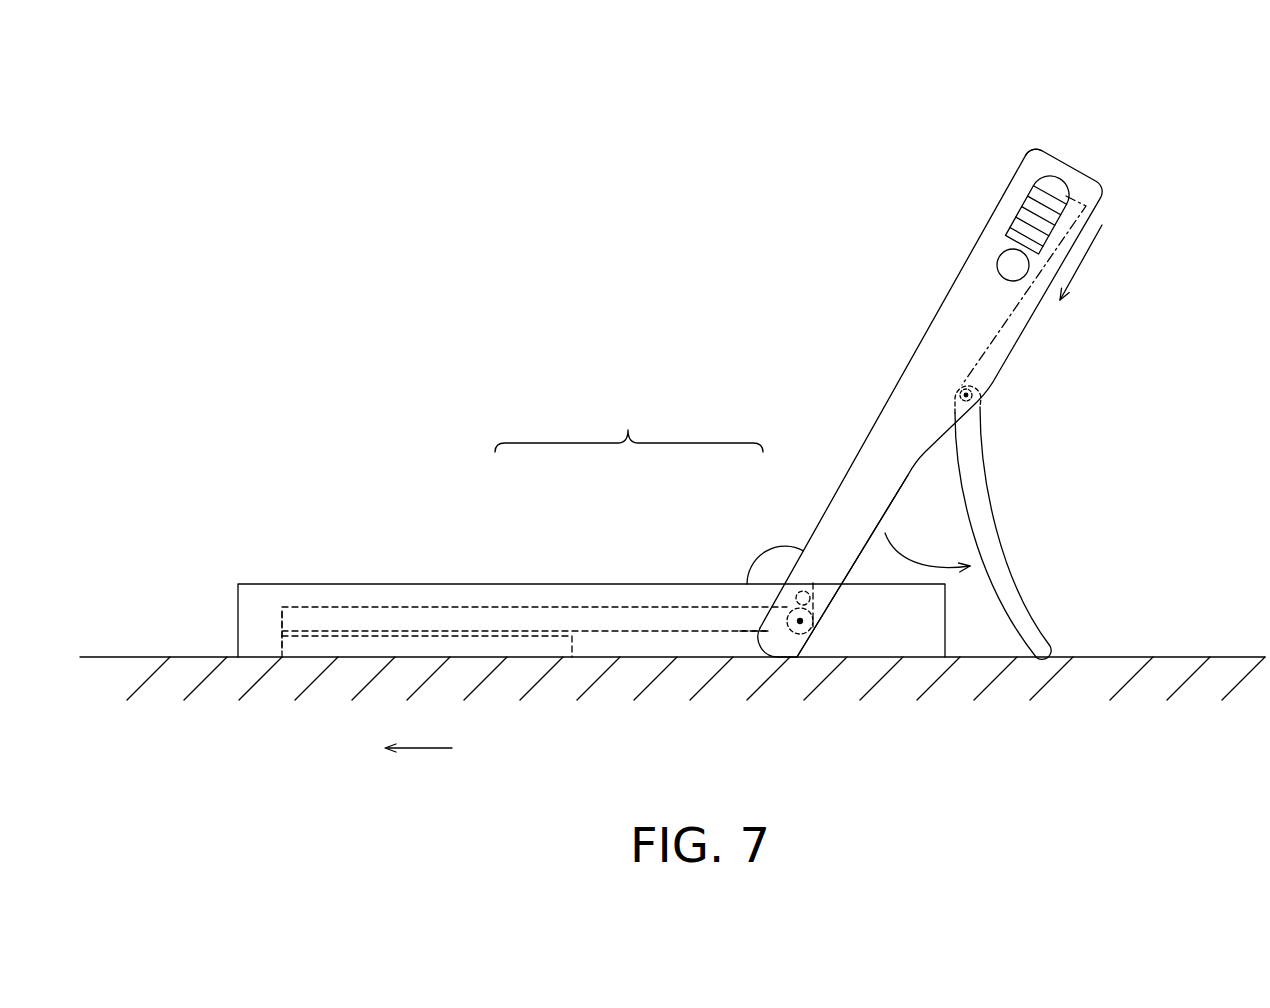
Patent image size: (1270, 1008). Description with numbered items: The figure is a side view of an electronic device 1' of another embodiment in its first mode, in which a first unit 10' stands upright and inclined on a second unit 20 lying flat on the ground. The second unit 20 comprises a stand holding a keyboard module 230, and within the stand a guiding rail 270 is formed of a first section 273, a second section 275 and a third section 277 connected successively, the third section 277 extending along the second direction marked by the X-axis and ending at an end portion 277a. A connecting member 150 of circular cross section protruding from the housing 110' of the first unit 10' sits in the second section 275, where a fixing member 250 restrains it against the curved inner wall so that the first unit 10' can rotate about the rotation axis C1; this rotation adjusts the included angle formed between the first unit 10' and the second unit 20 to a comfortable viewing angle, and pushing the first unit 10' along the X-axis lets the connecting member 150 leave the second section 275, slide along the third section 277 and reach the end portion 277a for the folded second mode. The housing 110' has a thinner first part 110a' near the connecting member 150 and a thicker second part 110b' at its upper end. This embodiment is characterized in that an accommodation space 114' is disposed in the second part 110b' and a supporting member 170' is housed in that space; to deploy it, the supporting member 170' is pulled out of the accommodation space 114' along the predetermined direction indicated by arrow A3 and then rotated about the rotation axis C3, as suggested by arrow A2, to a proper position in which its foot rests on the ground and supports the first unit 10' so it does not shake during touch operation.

The electronic device 1' is at (268, 135).
The first unit 10' is at (991, 106).
The second unit 20 is at (218, 607).
The housing 110' is at (931, 403).
The first part 110a' is at (834, 509).
The second part 110b' is at (980, 204).
The accommodation space 114' is at (1076, 290).
The connecting member 150 is at (788, 628).
The supporting member 170' is at (1050, 522).
The keyboard module 230 is at (373, 645).
The fixing member 250 is at (820, 602).
The guiding rail 270 is at (629, 423).
The first section 273 is at (785, 600).
The second section 275 is at (775, 620).
The third section 277 is at (547, 618).
The end portion 277a is at (283, 614).
The rotation axis C1 is at (800, 635).
The rotation axis C3 is at (980, 392).
The arrow A2 is at (927, 549).
The arrow A3 is at (1090, 262).
The X-axis X is at (398, 752).